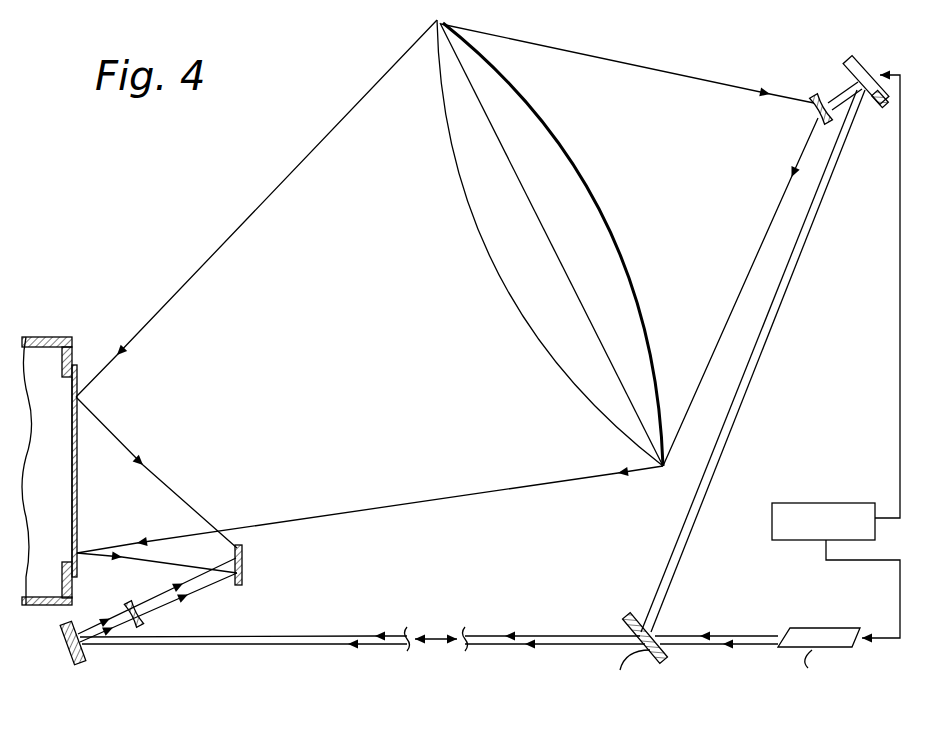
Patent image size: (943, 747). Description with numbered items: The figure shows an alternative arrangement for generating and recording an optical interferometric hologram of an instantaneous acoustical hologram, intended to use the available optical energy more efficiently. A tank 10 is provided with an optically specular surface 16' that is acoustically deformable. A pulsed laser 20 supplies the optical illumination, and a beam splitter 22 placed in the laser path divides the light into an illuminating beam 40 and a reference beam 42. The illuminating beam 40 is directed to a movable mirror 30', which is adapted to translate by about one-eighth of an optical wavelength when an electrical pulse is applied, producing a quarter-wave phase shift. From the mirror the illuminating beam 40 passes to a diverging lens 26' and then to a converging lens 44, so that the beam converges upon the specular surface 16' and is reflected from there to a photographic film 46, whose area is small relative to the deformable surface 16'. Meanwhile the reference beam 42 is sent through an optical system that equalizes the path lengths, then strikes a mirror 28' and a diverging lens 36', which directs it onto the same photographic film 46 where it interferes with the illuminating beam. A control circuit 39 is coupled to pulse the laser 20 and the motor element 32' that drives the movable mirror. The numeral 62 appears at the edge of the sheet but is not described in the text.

The tank 10 is at (50, 336).
The optically specular surface 16' is at (103, 432).
The converging lens 44 is at (437, 58).
The diverging lens 26' is at (791, 125).
The motor element 32' is at (844, 68).
The movable mirror 30' is at (869, 134).
The illuminating beam 40 is at (727, 446).
The control circuit 39 is at (806, 503).
The pulsed laser 20 is at (834, 627).
The beam splitter 22 is at (631, 618).
The reference beam 42 is at (578, 630).
The photographic film 46 is at (242, 577).
The diverging lens 36' is at (117, 597).
The mirror 28' is at (55, 671).
The element 62 is at (658, 743).